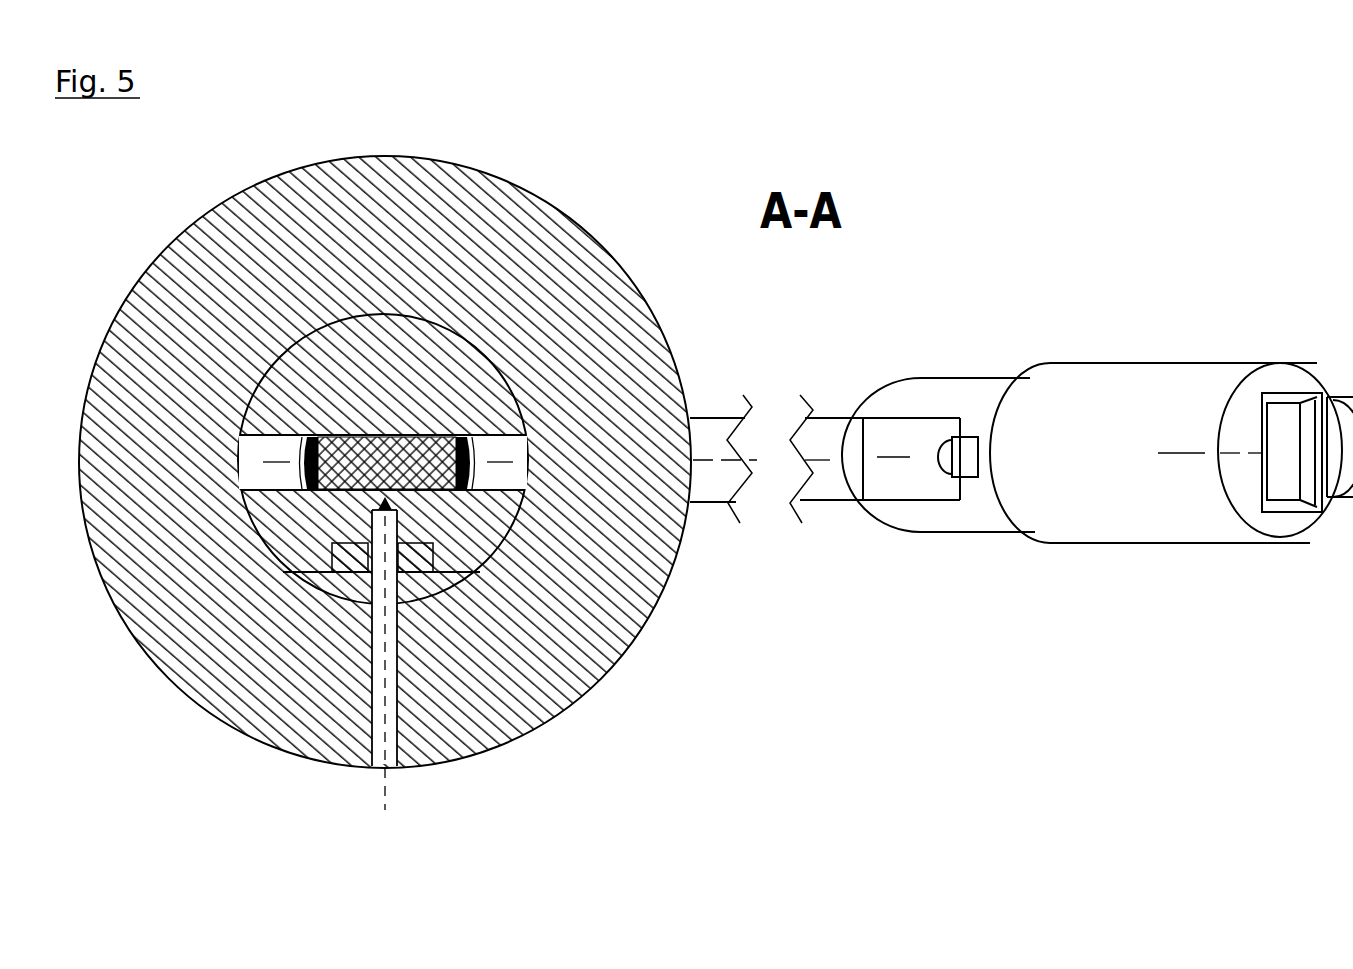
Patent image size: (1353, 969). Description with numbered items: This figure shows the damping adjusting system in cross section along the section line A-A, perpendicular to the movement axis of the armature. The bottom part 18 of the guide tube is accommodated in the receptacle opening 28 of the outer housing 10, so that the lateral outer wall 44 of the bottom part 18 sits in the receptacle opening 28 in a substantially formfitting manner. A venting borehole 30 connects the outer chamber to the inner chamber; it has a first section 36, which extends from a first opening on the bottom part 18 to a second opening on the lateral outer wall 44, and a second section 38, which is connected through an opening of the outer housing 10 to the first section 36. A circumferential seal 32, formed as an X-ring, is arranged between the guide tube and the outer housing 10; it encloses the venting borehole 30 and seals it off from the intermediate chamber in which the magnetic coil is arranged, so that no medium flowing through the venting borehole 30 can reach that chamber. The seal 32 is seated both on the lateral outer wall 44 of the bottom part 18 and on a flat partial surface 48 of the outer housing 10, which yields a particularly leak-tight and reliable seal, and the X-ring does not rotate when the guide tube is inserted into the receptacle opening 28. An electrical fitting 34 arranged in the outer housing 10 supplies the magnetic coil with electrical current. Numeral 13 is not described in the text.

The outer housing 10 is at (425, 227).
The bottom part 18 is at (423, 340).
The receptacle opening 28 is at (318, 373).
The electrical fitting 34 is at (462, 440).
The circumferential seal 32 is at (405, 557).
The first section 36 is at (383, 528).
The transverse groove 13 is at (327, 572).
The venting borehole 30 is at (372, 765).
The second section 38 is at (390, 675).
The flat partial surface 48 is at (458, 572).
The lateral outer wall 44 is at (477, 570).